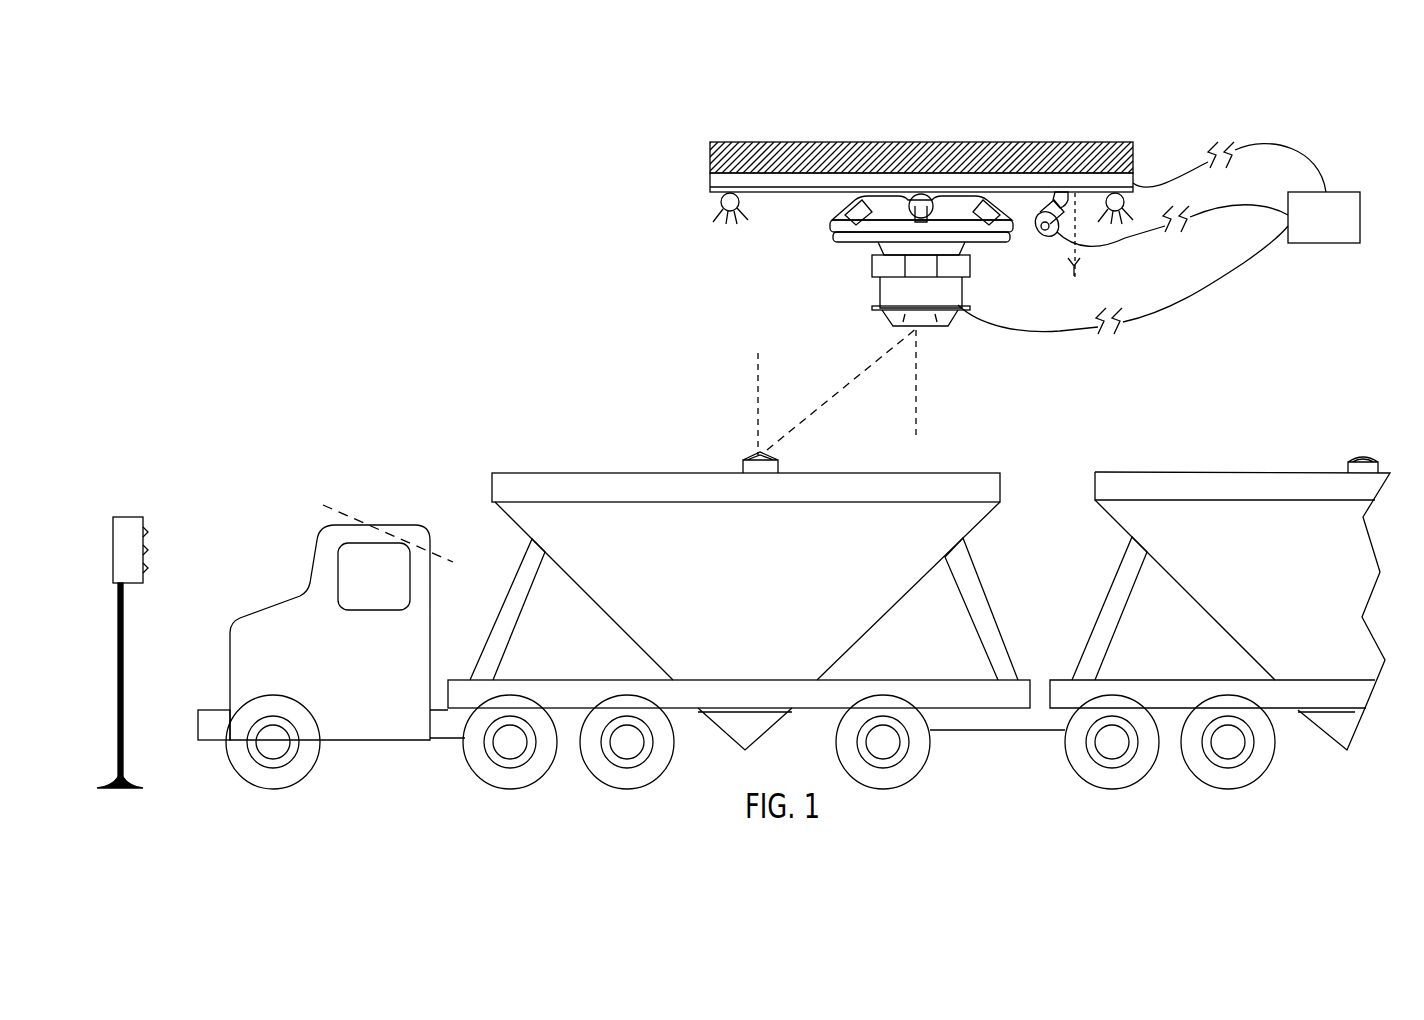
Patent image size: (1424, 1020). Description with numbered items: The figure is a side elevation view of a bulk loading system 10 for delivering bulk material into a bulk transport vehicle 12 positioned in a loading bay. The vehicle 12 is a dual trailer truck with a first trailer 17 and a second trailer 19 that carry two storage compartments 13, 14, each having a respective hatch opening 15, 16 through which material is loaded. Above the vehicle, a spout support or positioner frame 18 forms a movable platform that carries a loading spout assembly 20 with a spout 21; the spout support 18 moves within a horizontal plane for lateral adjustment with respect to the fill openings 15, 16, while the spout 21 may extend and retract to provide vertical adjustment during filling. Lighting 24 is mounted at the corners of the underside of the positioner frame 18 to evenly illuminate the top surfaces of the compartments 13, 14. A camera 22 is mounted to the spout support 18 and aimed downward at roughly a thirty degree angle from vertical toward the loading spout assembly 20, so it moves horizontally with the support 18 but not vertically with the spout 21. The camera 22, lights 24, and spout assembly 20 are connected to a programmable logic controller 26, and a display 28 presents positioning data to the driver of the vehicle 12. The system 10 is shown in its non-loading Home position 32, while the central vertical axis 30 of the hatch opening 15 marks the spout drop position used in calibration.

The bulk loading system 10 is at (577, 115).
The bulk transport vehicle 12 is at (794, 589).
The storage compartment 13 is at (880, 597).
The storage compartment 14 is at (1200, 586).
The hatch opening 15 is at (780, 471).
The hatch opening 16 is at (1345, 468).
The first trailer 17 is at (756, 573).
The spout support 18 is at (712, 180).
The second trailer 19 is at (1220, 578).
The loading spout assembly 20 is at (897, 276).
The spout 21 is at (893, 290).
The camera 22 is at (1046, 223).
The lighting 24 is at (720, 205).
The programmable logic controller 26 is at (1349, 201).
The display 28 is at (125, 527).
The central vertical axis 30 is at (757, 396).
The Home position 32 is at (920, 386).